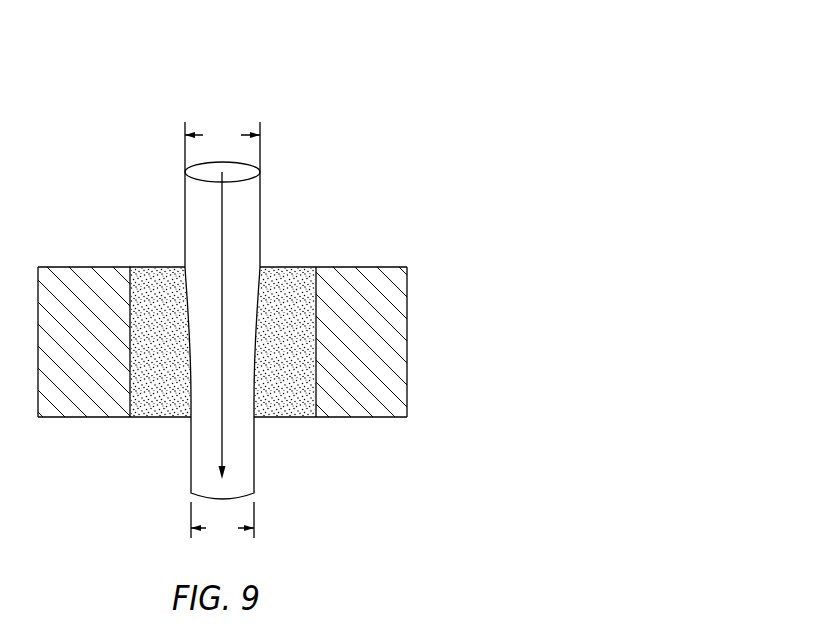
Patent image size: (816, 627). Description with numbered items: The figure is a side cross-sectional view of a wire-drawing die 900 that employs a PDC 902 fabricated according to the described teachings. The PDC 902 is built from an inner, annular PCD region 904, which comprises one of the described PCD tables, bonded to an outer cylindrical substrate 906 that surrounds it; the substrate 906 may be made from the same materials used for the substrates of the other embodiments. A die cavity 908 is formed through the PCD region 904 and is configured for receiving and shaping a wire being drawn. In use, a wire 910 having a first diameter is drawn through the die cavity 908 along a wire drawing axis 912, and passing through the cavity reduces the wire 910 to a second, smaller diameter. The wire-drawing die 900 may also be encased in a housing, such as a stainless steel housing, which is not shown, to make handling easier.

The wire-drawing die 900 is at (380, 130).
The PDC 902 is at (424, 305).
The inner, annular PCD region 904 is at (158, 283).
The outer cylindrical substrate 906 is at (70, 285).
The die cavity 908 is at (258, 418).
The wire 910 is at (208, 370).
The wire drawing axis 912 is at (222, 442).